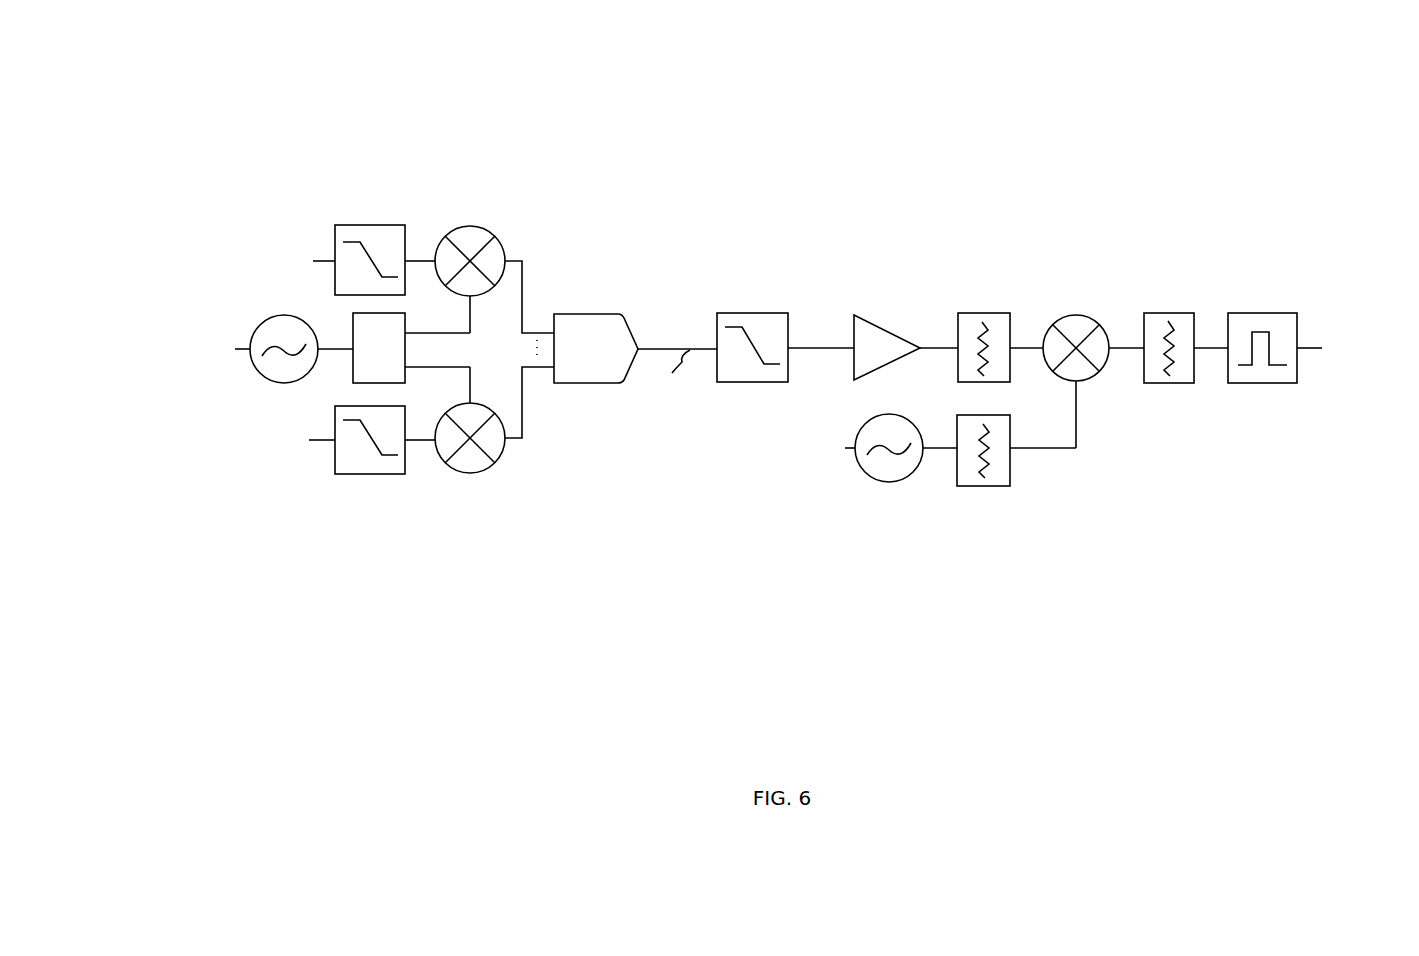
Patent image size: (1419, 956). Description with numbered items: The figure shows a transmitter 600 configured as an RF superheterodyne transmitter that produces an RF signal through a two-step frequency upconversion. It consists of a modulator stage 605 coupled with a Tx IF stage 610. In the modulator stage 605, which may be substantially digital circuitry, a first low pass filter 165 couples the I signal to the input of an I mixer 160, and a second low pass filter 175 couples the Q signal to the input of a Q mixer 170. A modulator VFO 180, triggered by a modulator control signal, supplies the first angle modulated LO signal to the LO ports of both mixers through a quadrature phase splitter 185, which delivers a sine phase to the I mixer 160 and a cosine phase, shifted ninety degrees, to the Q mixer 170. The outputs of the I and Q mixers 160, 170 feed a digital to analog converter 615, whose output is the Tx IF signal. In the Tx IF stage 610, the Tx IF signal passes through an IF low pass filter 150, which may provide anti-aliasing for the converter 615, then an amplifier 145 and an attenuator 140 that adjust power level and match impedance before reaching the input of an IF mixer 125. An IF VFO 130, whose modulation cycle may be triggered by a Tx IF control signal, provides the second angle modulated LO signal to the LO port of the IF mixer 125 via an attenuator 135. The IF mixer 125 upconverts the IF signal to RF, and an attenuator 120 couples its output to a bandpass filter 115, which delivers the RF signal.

The transmitter 600 is at (1121, 191).
The modulator stage 605 is at (655, 557).
The Tx IF stage 610 is at (1360, 557).
The digital to analog converter 615 is at (592, 313).
The first low pass filter 165 is at (372, 225).
The I mixer 160 is at (467, 226).
The modulator VFO 180 is at (258, 327).
The quadrature phase splitter 185 is at (352, 376).
The second low pass filter 175 is at (373, 474).
The Q mixer 170 is at (470, 473).
The IF low pass filter 150 is at (763, 313).
The amplifier 145 is at (869, 322).
The attenuator 140 is at (985, 313).
The IF mixer 125 is at (1075, 316).
The attenuator 120 is at (1167, 313).
The bandpass filter 115 is at (1259, 313).
The IF VFO 130 is at (886, 482).
The attenuator 135 is at (979, 486).